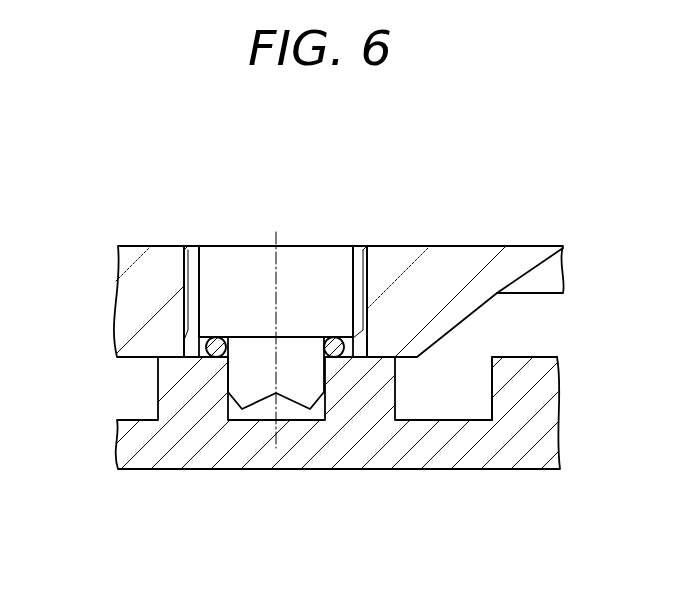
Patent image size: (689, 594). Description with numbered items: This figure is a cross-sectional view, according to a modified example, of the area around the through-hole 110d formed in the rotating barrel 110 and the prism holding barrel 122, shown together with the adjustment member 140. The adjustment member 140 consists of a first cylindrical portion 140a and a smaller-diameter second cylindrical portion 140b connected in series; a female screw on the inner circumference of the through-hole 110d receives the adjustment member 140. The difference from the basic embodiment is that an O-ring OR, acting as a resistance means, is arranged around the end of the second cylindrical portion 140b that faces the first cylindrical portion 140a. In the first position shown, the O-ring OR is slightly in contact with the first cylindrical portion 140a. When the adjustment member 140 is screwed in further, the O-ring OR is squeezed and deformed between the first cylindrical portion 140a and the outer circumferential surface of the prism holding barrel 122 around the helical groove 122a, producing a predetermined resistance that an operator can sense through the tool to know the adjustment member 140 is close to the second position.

The rotating barrel 110 is at (118, 247).
The through-hole 110d is at (367, 250).
The adjustment member 140 is at (278, 288).
The first cylindrical portion 140a is at (218, 258).
The second cylindrical portion 140b is at (299, 355).
The O-ring OR is at (337, 352).
The prism holding barrel 122 is at (143, 470).
The helical groove 122a is at (470, 418).